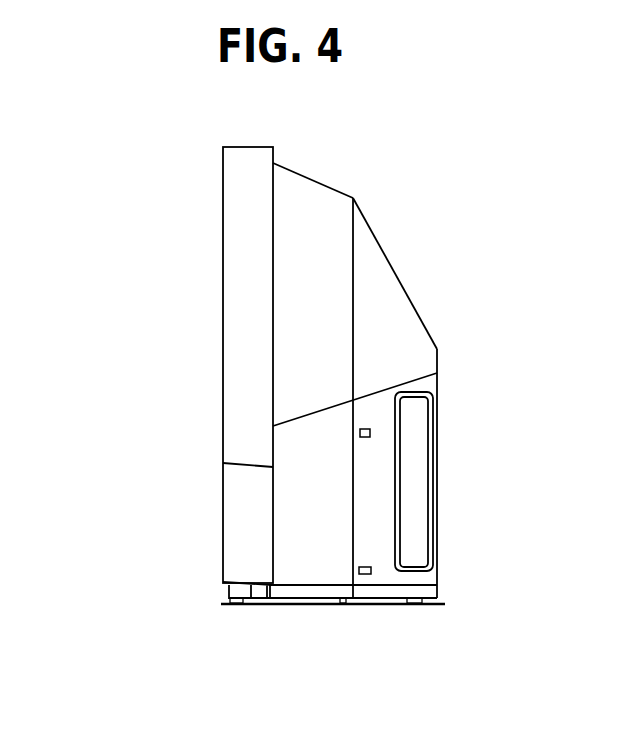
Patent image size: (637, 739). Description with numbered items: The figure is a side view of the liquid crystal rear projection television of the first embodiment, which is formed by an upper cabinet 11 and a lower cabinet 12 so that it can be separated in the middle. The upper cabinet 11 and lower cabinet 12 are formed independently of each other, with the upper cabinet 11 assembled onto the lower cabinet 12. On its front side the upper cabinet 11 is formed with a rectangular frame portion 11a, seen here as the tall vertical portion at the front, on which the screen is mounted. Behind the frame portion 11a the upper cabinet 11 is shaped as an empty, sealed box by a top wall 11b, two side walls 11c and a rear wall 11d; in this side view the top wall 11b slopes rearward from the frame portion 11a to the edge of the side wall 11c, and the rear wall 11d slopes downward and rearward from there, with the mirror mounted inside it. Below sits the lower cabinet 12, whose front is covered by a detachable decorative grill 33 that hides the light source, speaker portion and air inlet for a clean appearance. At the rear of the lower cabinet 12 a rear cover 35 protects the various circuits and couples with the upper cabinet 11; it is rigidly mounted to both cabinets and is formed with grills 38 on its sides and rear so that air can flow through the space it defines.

The upper cabinet 11 is at (207, 212).
The rectangular frame portion 11a is at (253, 147).
The top wall 11b is at (308, 178).
The side wall 11c is at (343, 217).
The rear wall 11d is at (388, 258).
The lower cabinet 12 is at (183, 510).
The decorative grill 33 is at (223, 568).
The rear cover 35 is at (437, 418).
The grills 38 is at (420, 512).